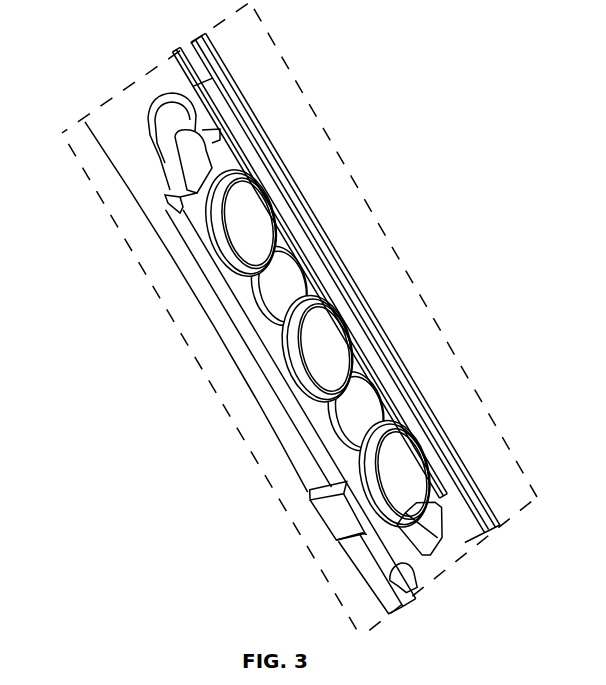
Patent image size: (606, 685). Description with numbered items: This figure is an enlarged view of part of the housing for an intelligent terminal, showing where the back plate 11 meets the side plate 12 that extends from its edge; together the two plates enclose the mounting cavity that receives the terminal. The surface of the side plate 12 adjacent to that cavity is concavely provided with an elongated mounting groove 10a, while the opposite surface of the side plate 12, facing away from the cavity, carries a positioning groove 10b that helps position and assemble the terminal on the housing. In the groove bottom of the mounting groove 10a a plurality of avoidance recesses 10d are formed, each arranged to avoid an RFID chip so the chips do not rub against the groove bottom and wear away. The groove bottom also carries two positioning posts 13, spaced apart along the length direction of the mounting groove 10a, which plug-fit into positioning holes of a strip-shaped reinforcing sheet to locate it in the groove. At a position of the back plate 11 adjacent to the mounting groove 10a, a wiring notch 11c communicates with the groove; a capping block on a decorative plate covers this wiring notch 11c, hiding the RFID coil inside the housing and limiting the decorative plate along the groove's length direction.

The mounting groove 10a is at (248, 288).
The positioning groove 10b is at (310, 358).
The avoidance recess 10d is at (345, 415).
The back plate 11 is at (360, 590).
The wiring notch 11c is at (337, 520).
The side plate 12 is at (142, 177).
The positioning post 13 is at (180, 148).